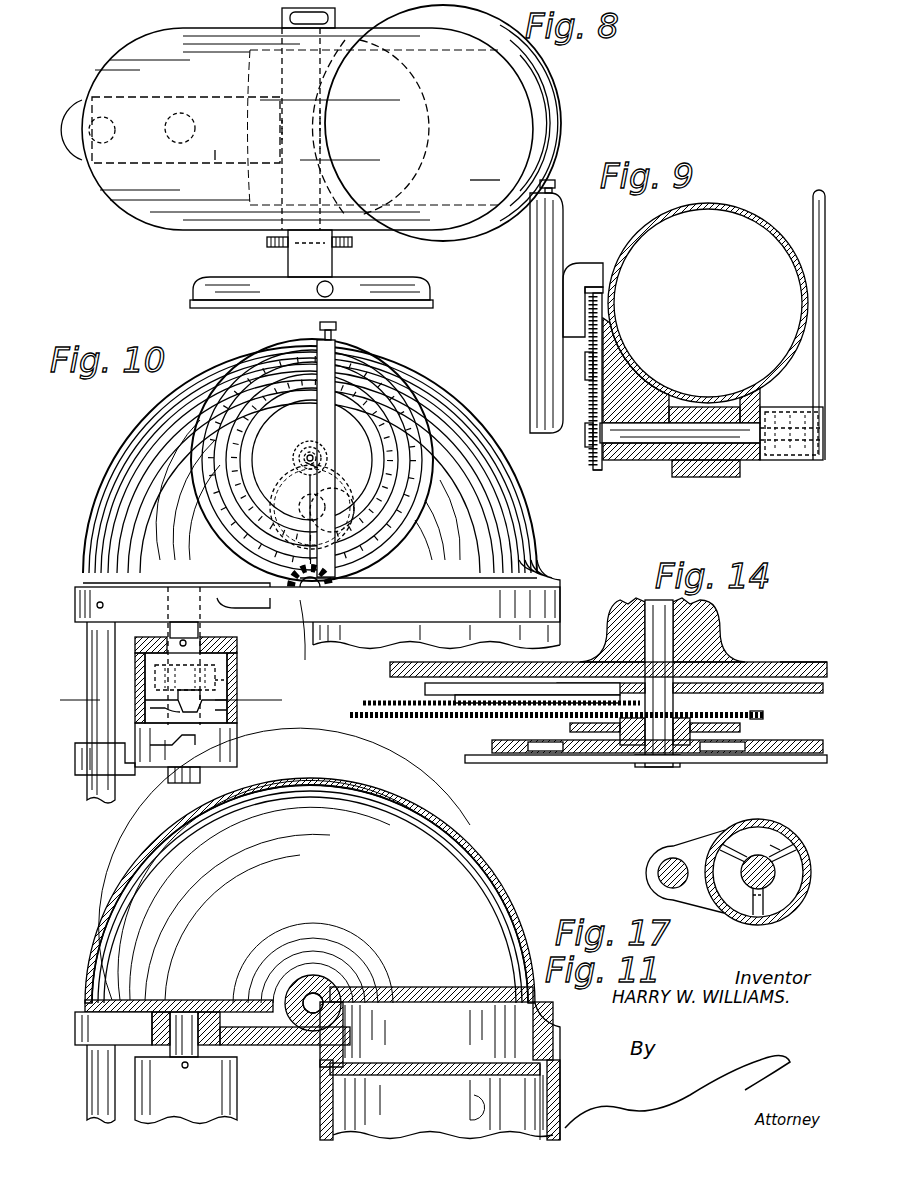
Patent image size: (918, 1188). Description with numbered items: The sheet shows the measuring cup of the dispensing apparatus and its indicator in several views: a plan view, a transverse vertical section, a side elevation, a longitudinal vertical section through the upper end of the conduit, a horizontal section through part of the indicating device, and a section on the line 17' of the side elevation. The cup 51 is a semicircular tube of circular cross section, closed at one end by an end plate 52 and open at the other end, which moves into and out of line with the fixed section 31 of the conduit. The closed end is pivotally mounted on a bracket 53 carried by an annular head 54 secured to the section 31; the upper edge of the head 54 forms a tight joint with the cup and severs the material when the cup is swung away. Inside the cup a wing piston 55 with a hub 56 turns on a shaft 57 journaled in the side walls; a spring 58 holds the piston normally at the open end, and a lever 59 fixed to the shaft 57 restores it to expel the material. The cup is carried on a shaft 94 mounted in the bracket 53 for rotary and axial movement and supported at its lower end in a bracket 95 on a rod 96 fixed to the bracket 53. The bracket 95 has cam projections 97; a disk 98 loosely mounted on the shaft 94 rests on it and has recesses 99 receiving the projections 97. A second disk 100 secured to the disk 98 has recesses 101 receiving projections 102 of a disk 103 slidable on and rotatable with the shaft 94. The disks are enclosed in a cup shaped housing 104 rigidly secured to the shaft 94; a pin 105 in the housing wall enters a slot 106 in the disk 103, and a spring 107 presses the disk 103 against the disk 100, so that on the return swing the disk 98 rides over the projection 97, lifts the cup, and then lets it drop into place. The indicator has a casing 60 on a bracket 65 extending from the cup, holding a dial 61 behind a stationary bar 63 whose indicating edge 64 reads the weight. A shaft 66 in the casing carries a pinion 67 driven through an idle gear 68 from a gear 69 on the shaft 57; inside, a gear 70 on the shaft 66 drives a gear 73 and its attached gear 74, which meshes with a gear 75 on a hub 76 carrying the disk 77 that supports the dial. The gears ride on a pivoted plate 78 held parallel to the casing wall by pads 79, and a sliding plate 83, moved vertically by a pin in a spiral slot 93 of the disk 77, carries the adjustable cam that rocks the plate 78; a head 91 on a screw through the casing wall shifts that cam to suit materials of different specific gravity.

In FIG. 10, the section line 17' is at (179, 700).
In FIG. 10, the fixed section of the conduit 31 is at (514, 630).
In FIG. 11, the fixed section of the conduit 31 is at (556, 1090).
In FIG. 8, the cup 51 is at (477, 170).
In FIG. 9, the cup 51 is at (640, 232).
In FIG. 10, the cup 51 is at (405, 558).
In FIG. 11, the cup 51 is at (372, 795).
In FIG. 11, the end plate 52 is at (133, 1003).
In FIG. 8, the bracket 53 is at (214, 143).
In FIG. 9, the bracket 53 is at (706, 477).
In FIG. 10, the bracket 53 is at (75, 605).
In FIG. 11, the bracket 53 is at (122, 1028).
In FIG. 8, the annular head 54 is at (556, 134).
In FIG. 10, the annular head 54 is at (548, 592).
In FIG. 11, the annular head 54 is at (560, 1034).
In FIG. 11, the wing piston 55 is at (452, 987).
In FIG. 8, the hub 56 is at (336, 128).
In FIG. 9, the hub 56 is at (716, 407).
In FIG. 11, the hub 56 is at (326, 988).
In FIG. 8, the shaft 57 is at (282, 125).
In FIG. 9, the shaft 57 is at (682, 423).
In FIG. 10, the shaft 57 is at (319, 636).
In FIG. 11, the shaft 57 is at (306, 995).
In FIG. 9, the spring 58 is at (786, 462).
In FIG. 8, the lever 59 is at (282, 12).
In FIG. 9, the lever 59 is at (813, 202).
In FIG. 8, the casing 60 is at (418, 282).
In FIG. 9, the casing 60 is at (550, 432).
In FIG. 10, the casing 60 is at (250, 362).
In FIG. 14, the casing 60 is at (716, 640).
In FIG. 14, the dial 61 is at (490, 763).
In FIG. 10, the bar 63 is at (318, 414).
In FIG. 10, the indicating edge 64 is at (300, 497).
In FIG. 8, the bracket 65 is at (285, 253).
In FIG. 9, the bracket 65 is at (580, 278).
In FIG. 14, the shaft 66 is at (652, 610).
In FIG. 8, the pinion 67 is at (340, 247).
In FIG. 9, the pinion 67 is at (600, 316).
In FIG. 10, the pinion 67 is at (323, 450).
In FIG. 9, the idle gear 68 is at (602, 343).
In FIG. 10, the idle gear 68 is at (338, 494).
In FIG. 9, the gear 69 is at (596, 470).
In FIG. 10, the gear 69 is at (335, 590).
In FIG. 14, the gear 70 is at (735, 688).
In FIG. 14, the gear 73 is at (487, 692).
In FIG. 14, the gear 74 is at (556, 729).
In FIG. 14, the gear 75 is at (763, 716).
In FIG. 14, the hub 76 is at (680, 748).
In FIG. 14, the disk 77 is at (604, 755).
In FIG. 14, the pivoted plate 78 is at (572, 683).
In FIG. 14, the projections or pads 79 is at (798, 663).
In FIG. 14, the sliding plate 83 is at (570, 728).
In FIG. 9, the head 91 is at (556, 184).
In FIG. 10, the head 91 is at (338, 328).
In FIG. 14, the spiral slot 93 is at (543, 752).
In FIG. 8, the shaft 94 is at (166, 124).
In FIG. 10, the shaft 94 is at (183, 630).
In FIG. 17, the shaft 94 is at (758, 855).
In FIG. 11, the shaft 94 is at (185, 1015).
In FIG. 10, the bracket 95 is at (168, 772).
In FIG. 17, the bracket 95 is at (712, 845).
In FIG. 8, the rod 96 is at (110, 137).
In FIG. 10, the rod 96 is at (97, 720).
In FIG. 17, the rod 96 is at (673, 858).
In FIG. 11, the rod 96 is at (92, 1086).
In FIG. 10, the cam projection 97 is at (180, 775).
In FIG. 17, the cam projection 97 is at (742, 902).
In FIG. 10, the disk 98 is at (215, 735).
In FIG. 10, the recess 99 is at (160, 760).
In FIG. 10, the second disk 100 is at (222, 710).
In FIG. 17, the second disk 100 is at (780, 852).
In FIG. 10, the recess 101 is at (205, 705).
In FIG. 17, the recess 101 is at (788, 906).
In FIG. 10, the projection 102 is at (105, 759).
In FIG. 10, the disk 103 is at (145, 676).
In FIG. 10, the cup shaped housing 104 is at (135, 648).
In FIG. 17, the cup shaped housing 104 is at (770, 845).
In FIG. 11, the cup shaped housing 104 is at (186, 1090).
In FIG. 10, the pin 105 is at (215, 672).
In FIG. 10, the slot 106 is at (228, 684).
In FIG. 10, the spring 107 is at (205, 600).